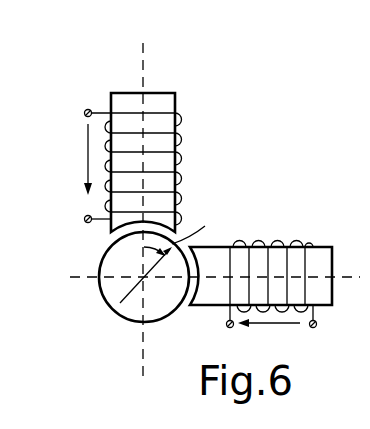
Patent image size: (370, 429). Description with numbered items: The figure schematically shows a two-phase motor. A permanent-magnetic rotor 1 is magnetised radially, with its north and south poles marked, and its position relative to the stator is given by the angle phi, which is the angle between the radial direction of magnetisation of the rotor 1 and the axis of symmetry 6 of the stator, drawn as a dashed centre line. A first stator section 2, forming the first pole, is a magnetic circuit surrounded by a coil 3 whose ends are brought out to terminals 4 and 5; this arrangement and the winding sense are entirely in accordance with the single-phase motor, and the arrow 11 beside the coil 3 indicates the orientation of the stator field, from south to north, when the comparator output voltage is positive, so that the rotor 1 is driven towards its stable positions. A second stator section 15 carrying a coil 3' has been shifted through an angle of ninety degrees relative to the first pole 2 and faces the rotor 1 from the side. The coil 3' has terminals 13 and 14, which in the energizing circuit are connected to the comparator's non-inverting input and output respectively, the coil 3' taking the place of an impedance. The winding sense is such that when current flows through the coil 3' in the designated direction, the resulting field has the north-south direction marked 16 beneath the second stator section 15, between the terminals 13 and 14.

The permanent-magnetic rotor 1 is at (101, 288).
The first stator section 2 is at (165, 101).
The coil 3 is at (149, 169).
The coil 3' is at (271, 262).
The terminal 4 is at (88, 109).
The terminal 5 is at (85, 218).
The axis of symmetry 6 is at (143, 345).
The arrow 11 is at (87, 160).
The terminal 13 is at (240, 337).
The terminal 14 is at (316, 327).
The second stator section 15 is at (333, 296).
The north-south direction 16 is at (277, 324).